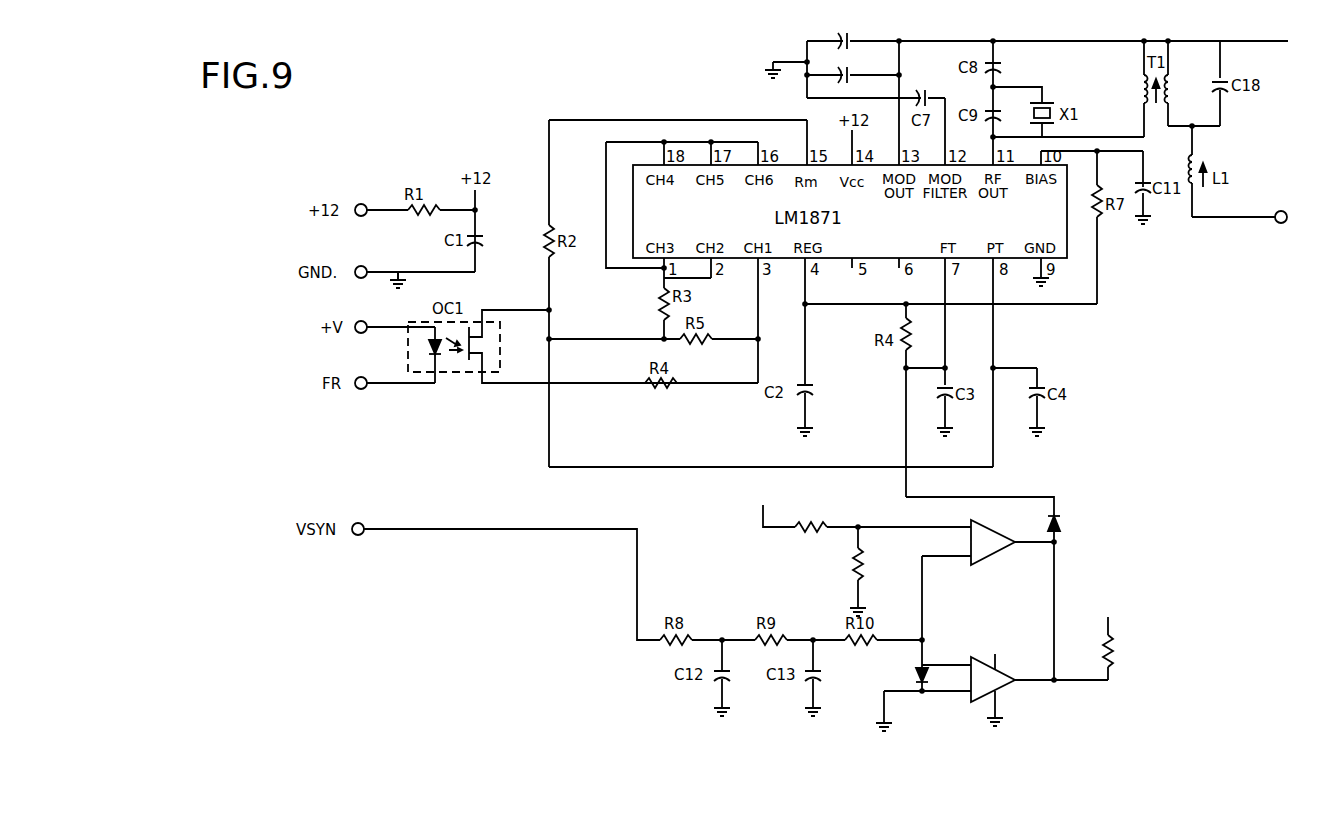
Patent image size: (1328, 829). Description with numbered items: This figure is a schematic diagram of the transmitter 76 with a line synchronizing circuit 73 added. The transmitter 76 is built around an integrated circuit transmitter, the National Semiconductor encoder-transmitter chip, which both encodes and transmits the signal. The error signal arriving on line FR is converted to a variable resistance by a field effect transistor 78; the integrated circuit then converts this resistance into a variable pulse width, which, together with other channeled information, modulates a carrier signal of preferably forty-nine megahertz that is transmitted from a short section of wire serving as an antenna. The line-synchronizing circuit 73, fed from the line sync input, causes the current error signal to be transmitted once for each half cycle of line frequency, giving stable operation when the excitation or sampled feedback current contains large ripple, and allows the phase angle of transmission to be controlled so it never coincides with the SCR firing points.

The transmitter 76 is at (717, 66).
The line-synchronizing circuit 73 is at (1082, 558).
The field effect transistor 78 is at (474, 372).